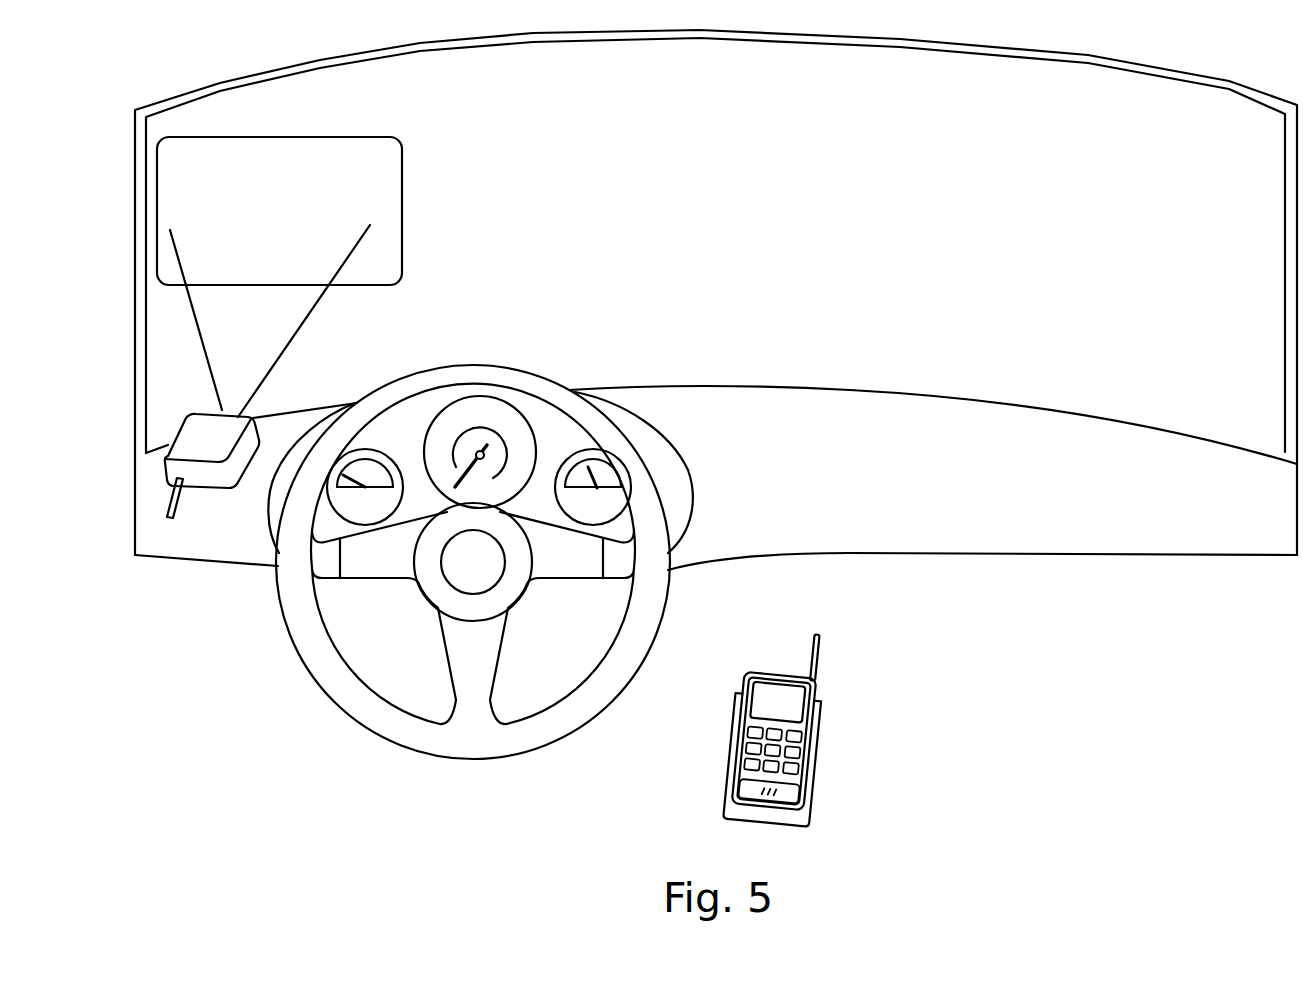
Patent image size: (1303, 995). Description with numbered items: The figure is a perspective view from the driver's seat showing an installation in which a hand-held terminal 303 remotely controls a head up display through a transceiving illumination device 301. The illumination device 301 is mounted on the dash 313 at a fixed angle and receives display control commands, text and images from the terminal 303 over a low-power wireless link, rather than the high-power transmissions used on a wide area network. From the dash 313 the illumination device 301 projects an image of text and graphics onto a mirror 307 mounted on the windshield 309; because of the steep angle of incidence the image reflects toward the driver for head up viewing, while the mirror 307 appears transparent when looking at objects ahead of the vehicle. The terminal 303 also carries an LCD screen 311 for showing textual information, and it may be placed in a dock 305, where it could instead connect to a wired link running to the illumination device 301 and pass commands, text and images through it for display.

The illumination device 301 is at (245, 415).
The terminal 303 is at (820, 677).
The dock 305 is at (823, 758).
The mirror 307 is at (402, 188).
The windshield 309 is at (420, 80).
The screen 311 is at (777, 690).
The dash 313 is at (1003, 525).